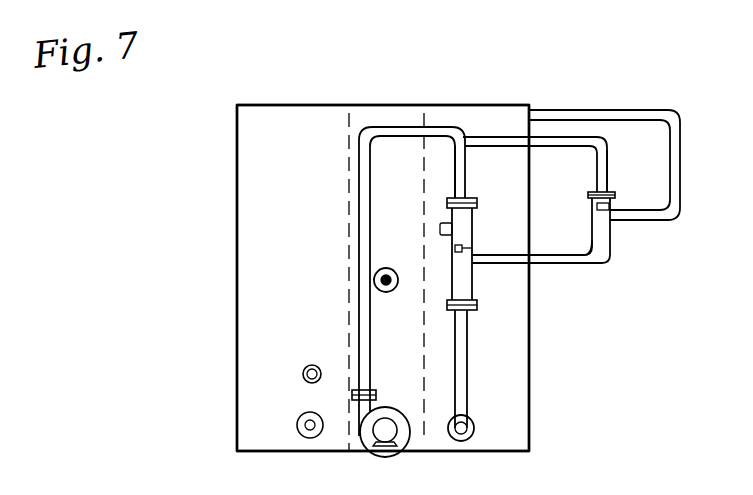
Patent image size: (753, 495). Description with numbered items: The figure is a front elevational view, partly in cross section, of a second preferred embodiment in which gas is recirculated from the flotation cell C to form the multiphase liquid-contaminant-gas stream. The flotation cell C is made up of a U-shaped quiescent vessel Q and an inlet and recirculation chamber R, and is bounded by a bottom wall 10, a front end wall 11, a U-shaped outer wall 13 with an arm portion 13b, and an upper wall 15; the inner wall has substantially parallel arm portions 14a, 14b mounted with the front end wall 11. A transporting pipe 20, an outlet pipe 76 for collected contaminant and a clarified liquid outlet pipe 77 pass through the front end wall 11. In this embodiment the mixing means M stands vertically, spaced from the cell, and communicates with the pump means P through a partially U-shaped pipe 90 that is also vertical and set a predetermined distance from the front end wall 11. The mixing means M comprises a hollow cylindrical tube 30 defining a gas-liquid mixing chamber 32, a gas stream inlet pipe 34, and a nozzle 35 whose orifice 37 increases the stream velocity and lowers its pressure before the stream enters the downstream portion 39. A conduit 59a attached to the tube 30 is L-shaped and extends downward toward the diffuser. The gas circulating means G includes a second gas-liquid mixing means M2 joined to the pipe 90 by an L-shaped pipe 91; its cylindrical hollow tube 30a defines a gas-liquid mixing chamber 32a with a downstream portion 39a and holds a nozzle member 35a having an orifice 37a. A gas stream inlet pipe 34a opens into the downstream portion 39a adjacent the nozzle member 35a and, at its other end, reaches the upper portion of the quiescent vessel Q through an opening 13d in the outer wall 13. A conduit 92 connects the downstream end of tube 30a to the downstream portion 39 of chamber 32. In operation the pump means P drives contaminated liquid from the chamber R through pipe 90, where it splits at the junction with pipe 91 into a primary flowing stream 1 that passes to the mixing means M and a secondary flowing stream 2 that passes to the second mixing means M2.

The bottom wall 10 is at (482, 452).
The front end wall 11 is at (306, 195).
The U-shaped outer wall 13 is at (533, 360).
The arm portion of outer wall 13b is at (237, 272).
The opening in vessel outer wall 13d is at (535, 108).
The arm portion of inner wall 14a is at (424, 115).
The arm portion of inner wall 14b is at (349, 115).
The upper wall 15 is at (278, 105).
The transporting pipe 20 is at (374, 282).
The primary flowing stream 1 is at (455, 153).
The secondary flowing stream 2 is at (483, 146).
The hollow cylindrical tube 30 is at (472, 218).
The cylindrical hollow tube 30a is at (613, 228).
The gas-liquid mixing chamber 32 is at (450, 203).
The gas-liquid mixing chamber 32a is at (593, 214).
The gas stream inlet pipe 34 is at (440, 228).
The gas stream inlet pipe 34a is at (652, 220).
The nozzle 35 is at (455, 250).
The nozzle member 35a is at (606, 205).
The orifice 37 is at (472, 243).
The orifice 37a is at (602, 192).
The downstream portion of mixing chamber 39 is at (470, 290).
The downstream portion of mixing chamber 39a is at (608, 240).
The conduit 59a is at (464, 377).
The outlet pipe 76 is at (306, 368).
The clarified liquid outlet pipe 77 is at (298, 417).
The partially U-shaped pipe 90 is at (390, 128).
The L-shaped pipe 91 is at (552, 145).
The conduit 92 is at (568, 266).
The flotation cell C is at (236, 148).
The gas circulating means G is at (604, 264).
The mixing means M is at (476, 206).
The second gas-liquid mixing means M2 is at (590, 226).
The pump means P is at (366, 440).
The quiescent vessel Q is at (485, 105).
The inlet and recirculation chamber R is at (375, 110).